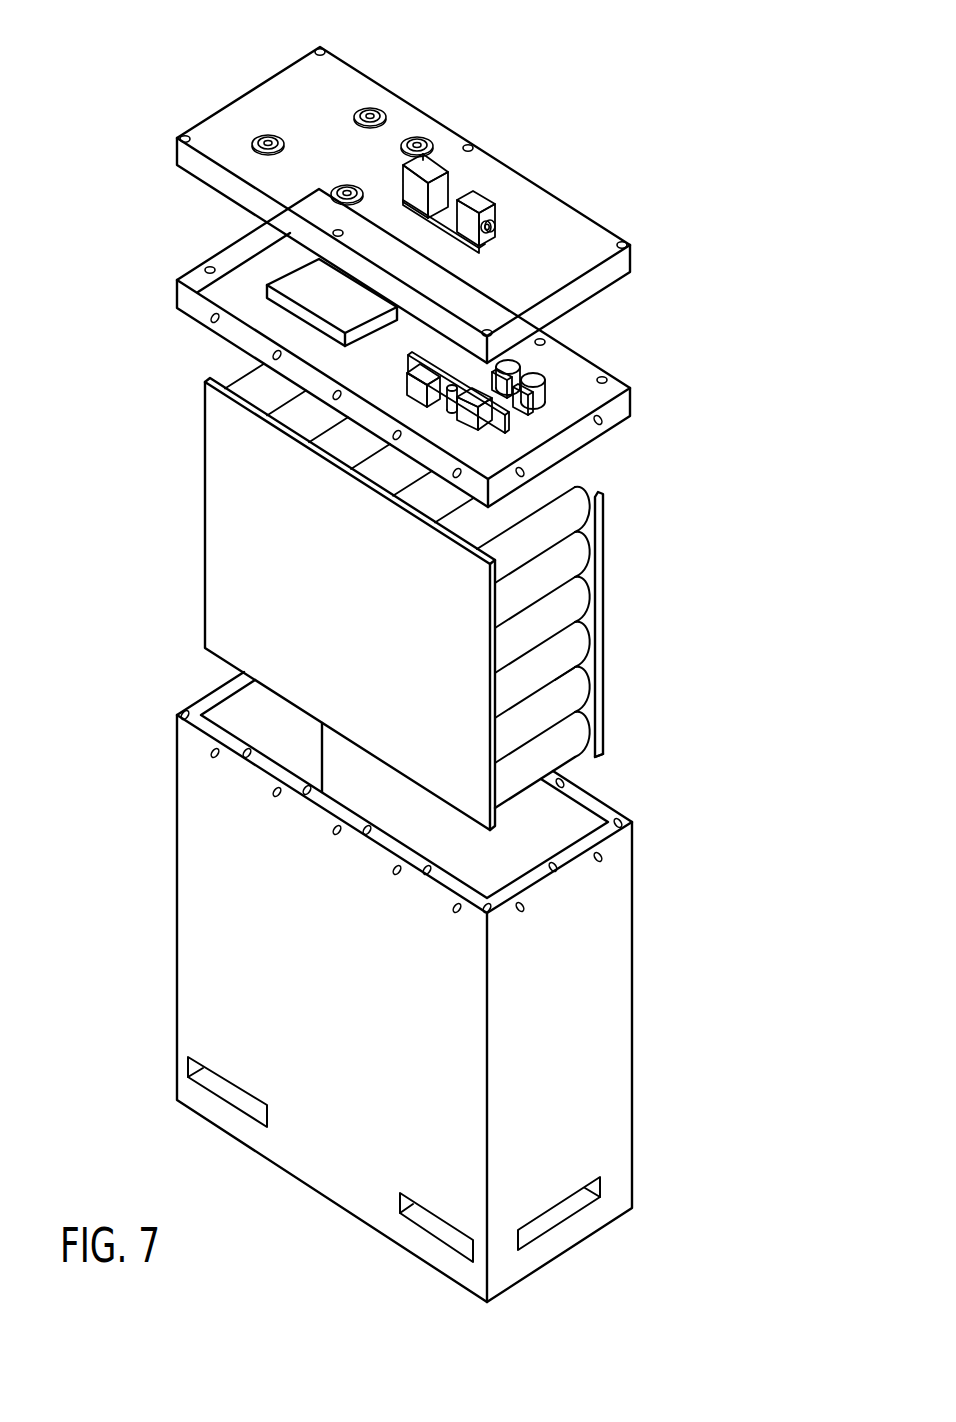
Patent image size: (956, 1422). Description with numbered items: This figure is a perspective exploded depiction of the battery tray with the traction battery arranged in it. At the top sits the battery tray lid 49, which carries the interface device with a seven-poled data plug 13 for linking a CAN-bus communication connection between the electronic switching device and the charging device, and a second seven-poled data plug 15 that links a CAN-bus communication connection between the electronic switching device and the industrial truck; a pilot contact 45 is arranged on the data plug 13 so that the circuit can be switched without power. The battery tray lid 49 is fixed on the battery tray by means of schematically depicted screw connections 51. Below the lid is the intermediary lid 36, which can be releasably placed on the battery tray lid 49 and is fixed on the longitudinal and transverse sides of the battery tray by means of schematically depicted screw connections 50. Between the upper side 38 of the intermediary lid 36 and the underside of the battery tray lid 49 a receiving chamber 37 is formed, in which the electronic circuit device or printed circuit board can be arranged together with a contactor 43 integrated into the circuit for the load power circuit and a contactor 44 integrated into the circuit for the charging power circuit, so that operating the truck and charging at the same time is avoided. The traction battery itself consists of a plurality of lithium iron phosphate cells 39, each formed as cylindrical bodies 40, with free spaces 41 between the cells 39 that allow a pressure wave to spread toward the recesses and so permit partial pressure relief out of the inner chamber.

The data plug 13 is at (477, 200).
The data plug 15 is at (432, 172).
The intermediary lid 36 is at (177, 293).
The receiving chamber 37 is at (236, 286).
The upper side of the intermediary lid 38 is at (565, 400).
The lithium iron phosphate cells 39 is at (570, 755).
The cylindrical bodies 40 is at (578, 683).
The free spaces 41 is at (572, 723).
The contactor 43 is at (478, 438).
The contactor 44 is at (300, 387).
The pilot contact 45 is at (492, 228).
The battery tray lid 49 is at (345, 72).
The screw connections 50 is at (213, 755).
The screw connections 51 is at (623, 246).